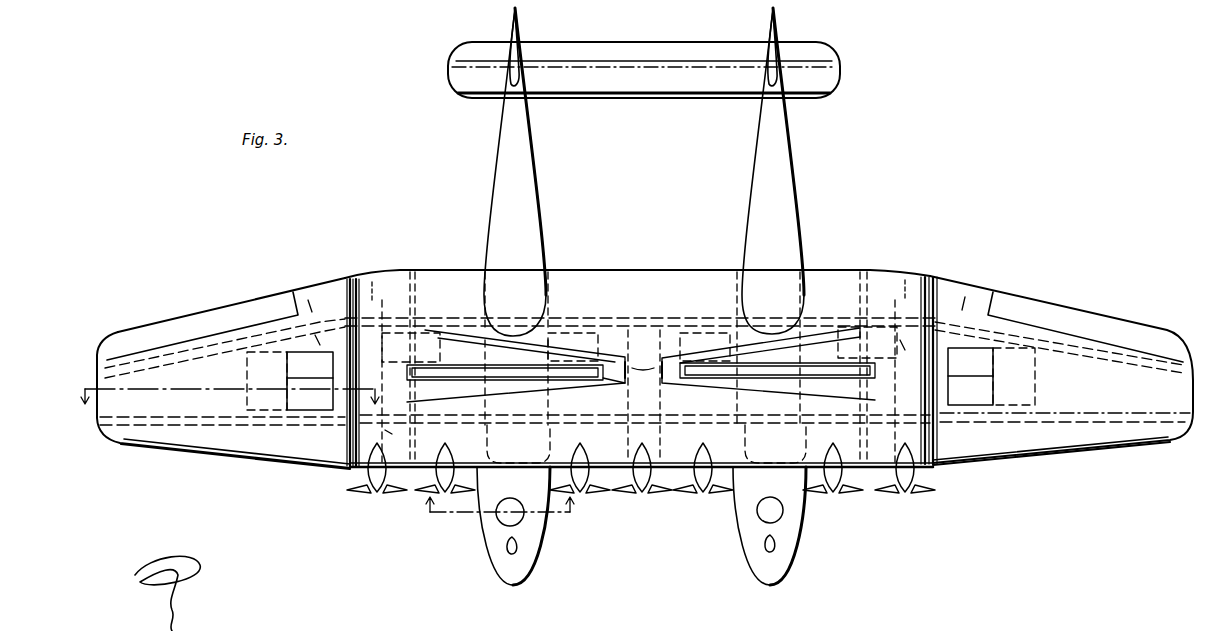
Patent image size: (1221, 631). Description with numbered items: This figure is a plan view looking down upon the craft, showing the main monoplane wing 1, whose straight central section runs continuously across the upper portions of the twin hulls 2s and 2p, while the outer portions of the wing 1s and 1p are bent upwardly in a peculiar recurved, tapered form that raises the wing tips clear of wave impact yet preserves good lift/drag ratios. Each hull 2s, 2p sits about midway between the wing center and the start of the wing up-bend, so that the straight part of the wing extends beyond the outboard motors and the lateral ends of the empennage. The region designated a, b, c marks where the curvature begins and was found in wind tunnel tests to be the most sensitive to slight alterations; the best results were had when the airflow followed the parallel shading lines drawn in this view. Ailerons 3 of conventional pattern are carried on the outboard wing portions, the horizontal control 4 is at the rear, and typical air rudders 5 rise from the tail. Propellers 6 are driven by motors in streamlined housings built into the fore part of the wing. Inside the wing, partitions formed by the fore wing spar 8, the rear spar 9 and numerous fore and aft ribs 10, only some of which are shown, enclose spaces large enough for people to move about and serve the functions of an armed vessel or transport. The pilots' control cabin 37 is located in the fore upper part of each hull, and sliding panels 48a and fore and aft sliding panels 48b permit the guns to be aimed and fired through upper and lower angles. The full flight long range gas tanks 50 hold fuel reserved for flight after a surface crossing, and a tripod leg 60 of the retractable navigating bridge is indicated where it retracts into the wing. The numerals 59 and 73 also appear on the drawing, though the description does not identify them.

The main monoplane wing 1 is at (620, 468).
The starboard outer wing portion 1s is at (243, 447).
The port outer wing portion 1p is at (1049, 454).
The starboard hull 2s is at (535, 209).
The port hull 2p is at (800, 527).
The ailerons 3 is at (178, 326).
The horizontal control 4 is at (632, 88).
The air rudders 5 is at (518, 42).
The propellers 6 is at (430, 493).
The fore wing spar 8 is at (400, 430).
The rear spar 9 is at (666, 315).
The fore and aft ribs 10 is at (435, 275).
The pilot's control cabin 37 is at (507, 544).
The sliding panels 48a is at (312, 410).
The fore and aft sliding panels 48b is at (250, 364).
The full flight long range gas tanks 50 is at (400, 320).
The hinge joint 59 is at (627, 363).
The tripod leg 60 is at (847, 370).
The link 73 is at (622, 383).
The wing curvature region point a is at (372, 282).
The wing curvature region point b is at (308, 300).
The wing curvature region point c is at (315, 335).